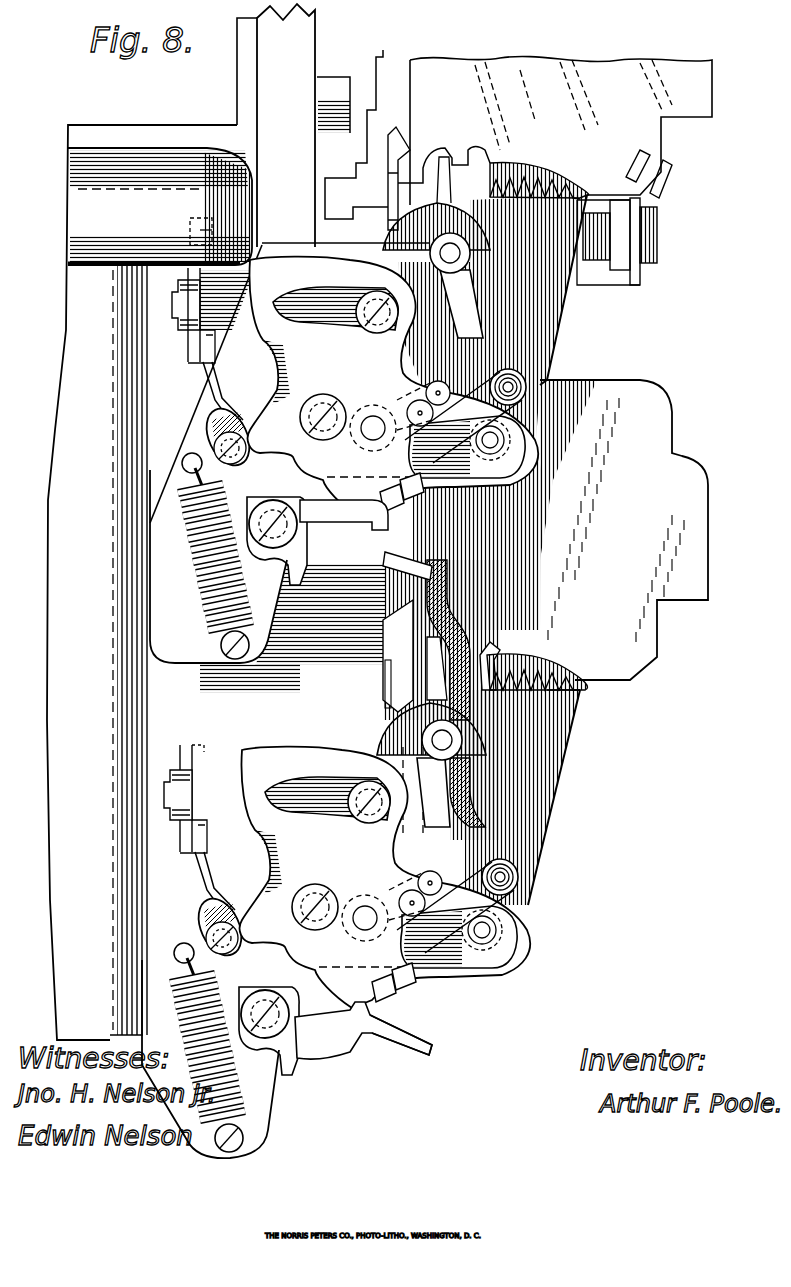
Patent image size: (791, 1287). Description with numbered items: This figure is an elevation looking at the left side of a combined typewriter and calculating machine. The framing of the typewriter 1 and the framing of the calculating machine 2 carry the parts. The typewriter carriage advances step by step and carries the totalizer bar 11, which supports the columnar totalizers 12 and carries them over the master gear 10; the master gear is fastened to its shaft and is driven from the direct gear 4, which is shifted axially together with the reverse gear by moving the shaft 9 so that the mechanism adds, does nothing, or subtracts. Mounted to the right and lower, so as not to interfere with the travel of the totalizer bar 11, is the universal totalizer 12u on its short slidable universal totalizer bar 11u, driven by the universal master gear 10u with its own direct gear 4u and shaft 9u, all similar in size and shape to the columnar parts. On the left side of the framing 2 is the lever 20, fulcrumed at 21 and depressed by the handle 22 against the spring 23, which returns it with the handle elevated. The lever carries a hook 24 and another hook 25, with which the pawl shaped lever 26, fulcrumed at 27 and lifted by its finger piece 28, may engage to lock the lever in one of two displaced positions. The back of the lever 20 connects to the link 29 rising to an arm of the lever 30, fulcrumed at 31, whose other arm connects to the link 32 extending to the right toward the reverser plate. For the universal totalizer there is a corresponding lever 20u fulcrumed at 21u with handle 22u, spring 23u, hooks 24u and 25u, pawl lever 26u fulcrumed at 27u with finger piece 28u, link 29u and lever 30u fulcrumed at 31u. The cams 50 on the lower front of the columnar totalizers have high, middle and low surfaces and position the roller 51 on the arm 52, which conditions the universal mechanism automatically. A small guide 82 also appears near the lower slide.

The framing of the typewriter 1 is at (64, 418).
The framing of the calculating machine 2 is at (312, 22).
The direct gear 4 is at (525, 195).
The shaft 9 is at (452, 255).
The master gear 10 is at (542, 192).
The totalizer bar 11 is at (385, 68).
The columnar totalizer 12 is at (555, 130).
The lever 20 is at (490, 372).
The fulcrum 21 is at (327, 397).
The handle 22 is at (515, 385).
The spring 23 is at (200, 548).
The hook 24 is at (420, 485).
The hook 25 is at (402, 497).
The pawl shaped lever 26 is at (338, 560).
The fulcrum 27 is at (270, 508).
The finger piece 28 is at (433, 570).
The link 29 is at (212, 428).
The lever 30 is at (190, 340).
The fulcrum 31 is at (178, 297).
The link 32 is at (203, 213).
The cam 50 is at (662, 182).
The roller 51 is at (657, 228).
The arm 52 is at (640, 270).
The guide 82 is at (221, 731).
The universal direct gear 4u is at (518, 690).
The universal shaft 9u is at (450, 741).
The universal totalizer master gear 10u is at (538, 686).
The universal totalizer bar 11u is at (387, 598).
The universal totalizer 12u is at (624, 530).
The universal lever 20u is at (542, 865).
The fulcrum 21u is at (384, 911).
The handle 22u is at (495, 915).
The spring 23u is at (233, 1050).
The hook 24u is at (446, 975).
The hook 25u is at (433, 992).
The pawl lever 26u is at (363, 1052).
The fulcrum 27u is at (264, 997).
The finger piece 28u is at (431, 1055).
The link 29u is at (163, 907).
The lever 30u is at (144, 787).
The fulcrum 31u is at (137, 795).